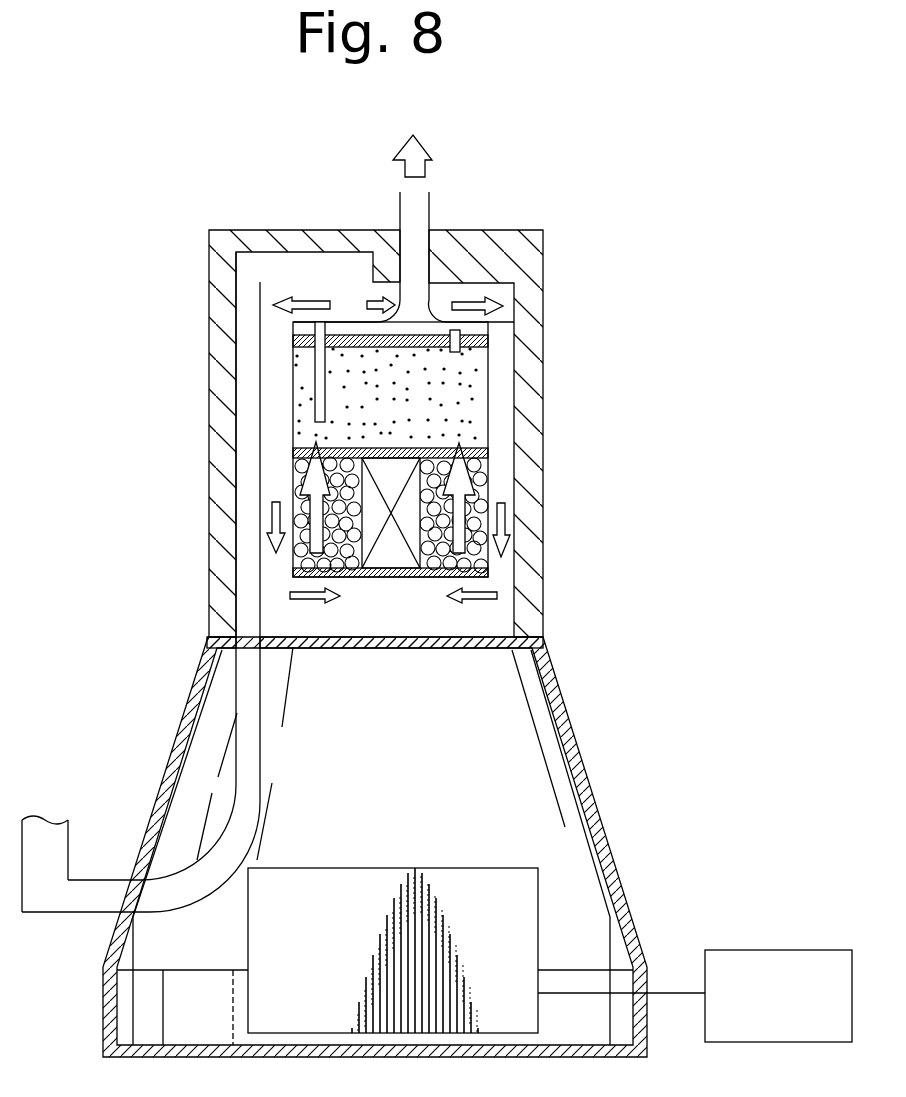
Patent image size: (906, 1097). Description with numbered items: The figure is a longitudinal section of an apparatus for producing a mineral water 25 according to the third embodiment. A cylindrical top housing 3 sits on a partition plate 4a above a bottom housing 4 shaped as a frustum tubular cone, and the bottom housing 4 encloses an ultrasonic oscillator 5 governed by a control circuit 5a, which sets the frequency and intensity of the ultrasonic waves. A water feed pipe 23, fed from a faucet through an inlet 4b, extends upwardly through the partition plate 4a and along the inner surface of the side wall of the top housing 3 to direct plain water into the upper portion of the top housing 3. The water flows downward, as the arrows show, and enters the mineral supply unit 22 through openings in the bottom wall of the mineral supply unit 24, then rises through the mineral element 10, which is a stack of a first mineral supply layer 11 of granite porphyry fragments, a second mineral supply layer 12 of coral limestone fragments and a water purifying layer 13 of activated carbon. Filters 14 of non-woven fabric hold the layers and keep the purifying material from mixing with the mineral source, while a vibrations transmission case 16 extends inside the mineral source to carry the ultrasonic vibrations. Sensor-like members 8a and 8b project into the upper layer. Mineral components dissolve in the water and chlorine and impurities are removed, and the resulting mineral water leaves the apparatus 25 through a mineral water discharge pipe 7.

The top housing 3 is at (530, 277).
The bottom housing 4 is at (580, 745).
The partition plate 4a is at (487, 633).
The outlet pipe 4b is at (118, 880).
The ultrasonic oscillator 5 is at (530, 913).
The control circuit 5a is at (792, 950).
The mineral water discharge pipe 7 is at (402, 210).
The sensor 8a is at (445, 320).
The sensor 8b is at (333, 322).
The mineral element 10 is at (425, 385).
The first mineral supply layer 11 is at (440, 483).
The second mineral supply layer 12 is at (474, 486).
The water purifying layer 13 is at (470, 383).
The filter 14 is at (293, 340).
The vibrations transmission case 16 is at (387, 463).
The mineral supply unit 22 is at (281, 402).
The water feed pipe 23 is at (240, 702).
The mineral supply unit 24 is at (512, 312).
The apparatus for producing a mineral water 25 is at (573, 203).